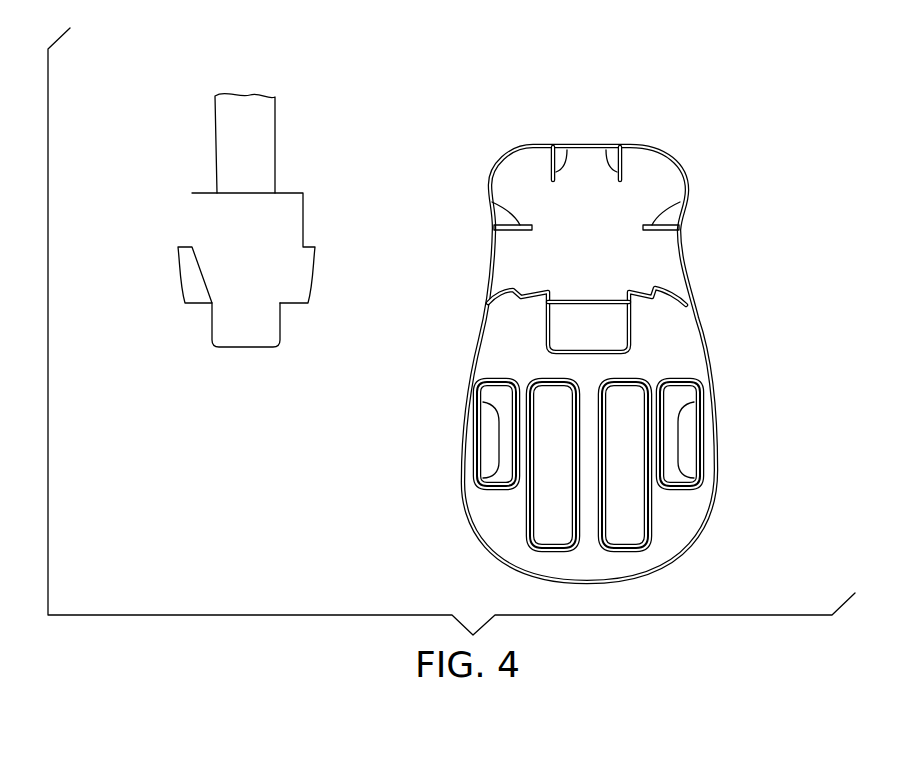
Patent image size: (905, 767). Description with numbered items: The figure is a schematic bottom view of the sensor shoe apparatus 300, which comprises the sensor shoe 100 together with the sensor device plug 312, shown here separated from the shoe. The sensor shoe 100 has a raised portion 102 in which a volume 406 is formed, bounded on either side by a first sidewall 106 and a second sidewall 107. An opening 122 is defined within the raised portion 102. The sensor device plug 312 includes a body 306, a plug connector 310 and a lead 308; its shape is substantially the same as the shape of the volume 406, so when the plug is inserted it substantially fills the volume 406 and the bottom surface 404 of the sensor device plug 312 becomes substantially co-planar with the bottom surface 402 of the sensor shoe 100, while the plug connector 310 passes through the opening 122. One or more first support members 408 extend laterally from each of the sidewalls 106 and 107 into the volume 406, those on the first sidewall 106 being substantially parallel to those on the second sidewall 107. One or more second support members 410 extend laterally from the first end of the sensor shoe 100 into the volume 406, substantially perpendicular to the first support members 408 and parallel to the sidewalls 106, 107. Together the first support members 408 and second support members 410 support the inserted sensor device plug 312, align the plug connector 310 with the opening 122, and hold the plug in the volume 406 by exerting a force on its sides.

The sensor shoe 100 is at (670, 337).
The raised portion 102 is at (533, 146).
The first sidewall 106 is at (698, 318).
The second sidewall 107 is at (483, 293).
The opening 122 is at (597, 283).
The sensor shoe apparatus 300 is at (410, 85).
The body 306 is at (267, 220).
The lead 308 is at (260, 113).
The plug connector 310 is at (283, 327).
The sensor device plug 312 is at (305, 175).
The bottom surface of the sensor shoe 402 is at (519, 368).
The bottom surface of the sensor device plug 404 is at (247, 248).
The volume 406 is at (614, 217).
The first support members 408 is at (490, 200).
The second support members 410 is at (613, 160).